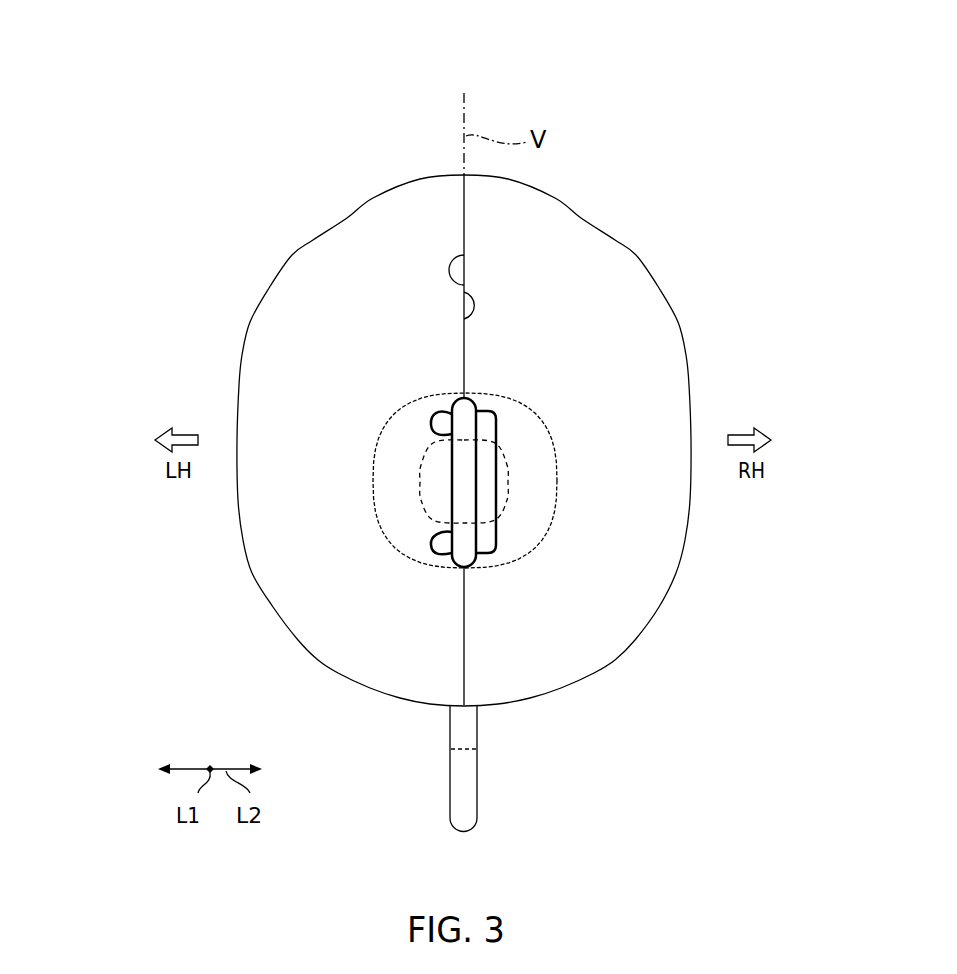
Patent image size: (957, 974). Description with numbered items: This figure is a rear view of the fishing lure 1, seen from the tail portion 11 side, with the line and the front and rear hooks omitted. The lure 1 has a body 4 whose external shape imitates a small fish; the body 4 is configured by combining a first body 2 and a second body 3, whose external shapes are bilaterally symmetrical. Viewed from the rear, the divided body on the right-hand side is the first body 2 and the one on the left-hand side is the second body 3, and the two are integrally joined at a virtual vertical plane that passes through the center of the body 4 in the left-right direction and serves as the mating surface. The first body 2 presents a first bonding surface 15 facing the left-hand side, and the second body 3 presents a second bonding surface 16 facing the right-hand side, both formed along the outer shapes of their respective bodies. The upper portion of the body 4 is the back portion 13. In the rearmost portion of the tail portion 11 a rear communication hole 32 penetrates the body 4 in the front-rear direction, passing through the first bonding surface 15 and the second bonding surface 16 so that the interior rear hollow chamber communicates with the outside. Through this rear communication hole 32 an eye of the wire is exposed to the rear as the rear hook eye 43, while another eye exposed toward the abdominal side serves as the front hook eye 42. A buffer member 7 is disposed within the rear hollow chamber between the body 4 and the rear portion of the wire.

The lure 1 is at (670, 64).
The first body 2 is at (560, 186).
The second body 3 is at (368, 186).
The body 4 is at (579, 62).
The buffer member 7 is at (490, 447).
The tail portion 11 is at (455, 372).
The back portion 13 is at (457, 196).
The first bonding surface 15 is at (464, 285).
The second bonding surface 16 is at (464, 318).
The rear communication hole 32 is at (484, 474).
The front hook eye 42 is at (470, 812).
The rear hook eye 43 is at (466, 501).